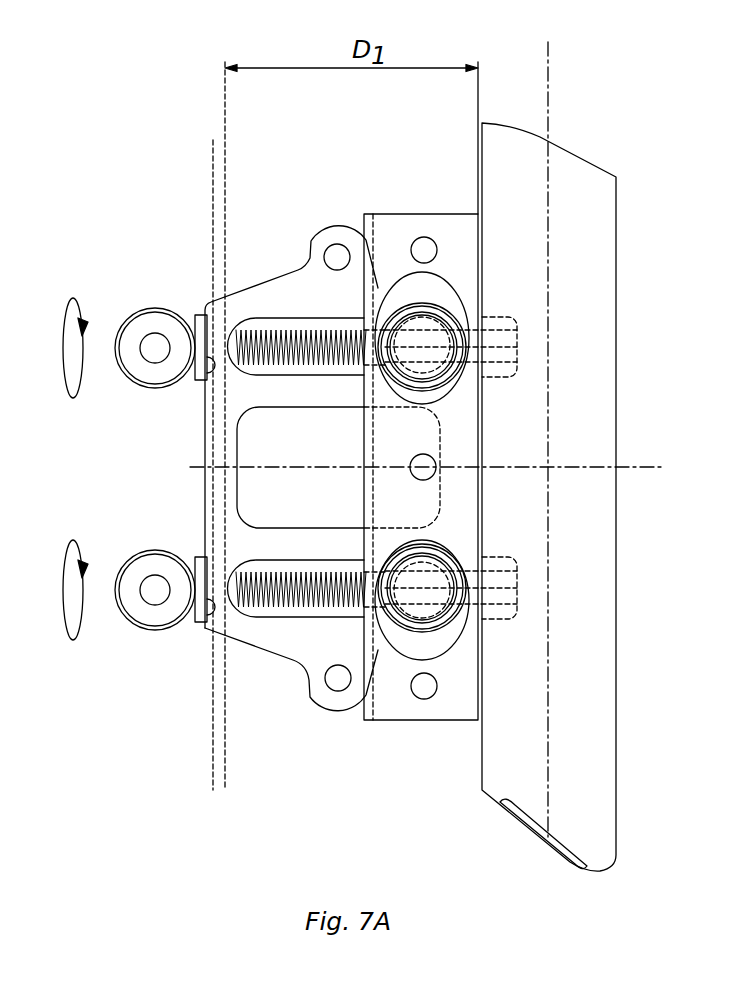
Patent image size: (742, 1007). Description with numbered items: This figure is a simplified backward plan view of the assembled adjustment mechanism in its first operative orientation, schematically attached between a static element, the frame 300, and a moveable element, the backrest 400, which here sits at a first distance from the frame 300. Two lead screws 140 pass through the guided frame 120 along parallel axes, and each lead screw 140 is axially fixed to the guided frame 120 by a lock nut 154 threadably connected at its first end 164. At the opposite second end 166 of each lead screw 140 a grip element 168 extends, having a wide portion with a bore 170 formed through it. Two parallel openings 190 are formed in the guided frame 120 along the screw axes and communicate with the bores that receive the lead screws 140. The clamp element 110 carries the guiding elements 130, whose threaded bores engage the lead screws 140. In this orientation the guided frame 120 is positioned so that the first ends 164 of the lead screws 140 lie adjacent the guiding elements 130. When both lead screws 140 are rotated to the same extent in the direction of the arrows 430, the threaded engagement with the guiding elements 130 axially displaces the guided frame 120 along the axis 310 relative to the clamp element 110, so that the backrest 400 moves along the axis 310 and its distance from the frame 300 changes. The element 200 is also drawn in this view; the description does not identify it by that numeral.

The clamp element 110 is at (405, 213).
The guided frame 120 is at (246, 303).
The guiding element 130 is at (443, 318).
The lead screw 140 is at (297, 331).
The lock nut 154 is at (493, 347).
The first end 164 is at (467, 377).
The second end 166 is at (207, 380).
The grip element 168 is at (153, 317).
The bore 170 is at (157, 357).
The opening 190 is at (380, 404).
The frame member 200 is at (550, 70).
The frame 300 is at (568, 187).
The axis 310 is at (626, 467).
The backrest 400 is at (216, 148).
The arrows 430 is at (74, 454).